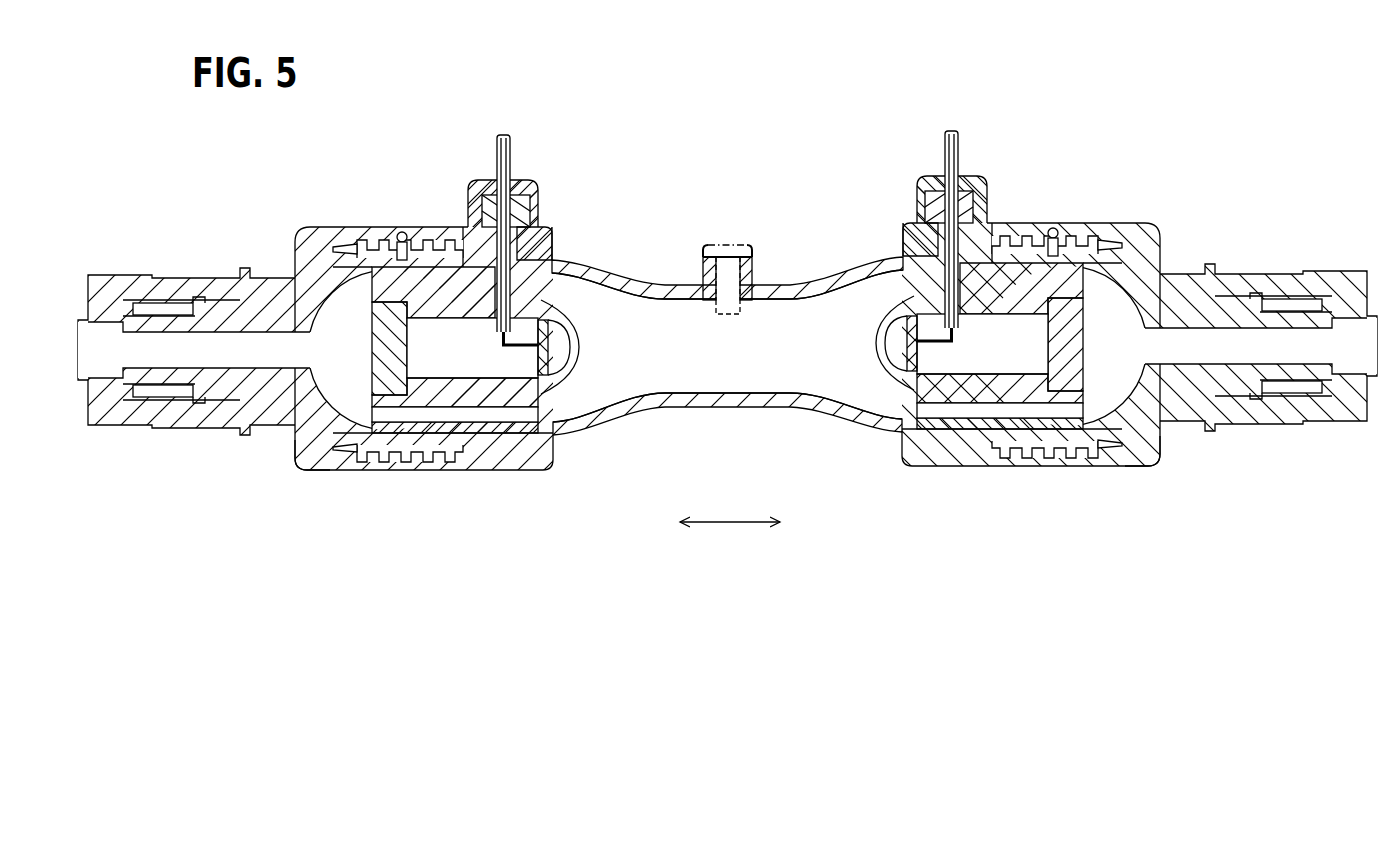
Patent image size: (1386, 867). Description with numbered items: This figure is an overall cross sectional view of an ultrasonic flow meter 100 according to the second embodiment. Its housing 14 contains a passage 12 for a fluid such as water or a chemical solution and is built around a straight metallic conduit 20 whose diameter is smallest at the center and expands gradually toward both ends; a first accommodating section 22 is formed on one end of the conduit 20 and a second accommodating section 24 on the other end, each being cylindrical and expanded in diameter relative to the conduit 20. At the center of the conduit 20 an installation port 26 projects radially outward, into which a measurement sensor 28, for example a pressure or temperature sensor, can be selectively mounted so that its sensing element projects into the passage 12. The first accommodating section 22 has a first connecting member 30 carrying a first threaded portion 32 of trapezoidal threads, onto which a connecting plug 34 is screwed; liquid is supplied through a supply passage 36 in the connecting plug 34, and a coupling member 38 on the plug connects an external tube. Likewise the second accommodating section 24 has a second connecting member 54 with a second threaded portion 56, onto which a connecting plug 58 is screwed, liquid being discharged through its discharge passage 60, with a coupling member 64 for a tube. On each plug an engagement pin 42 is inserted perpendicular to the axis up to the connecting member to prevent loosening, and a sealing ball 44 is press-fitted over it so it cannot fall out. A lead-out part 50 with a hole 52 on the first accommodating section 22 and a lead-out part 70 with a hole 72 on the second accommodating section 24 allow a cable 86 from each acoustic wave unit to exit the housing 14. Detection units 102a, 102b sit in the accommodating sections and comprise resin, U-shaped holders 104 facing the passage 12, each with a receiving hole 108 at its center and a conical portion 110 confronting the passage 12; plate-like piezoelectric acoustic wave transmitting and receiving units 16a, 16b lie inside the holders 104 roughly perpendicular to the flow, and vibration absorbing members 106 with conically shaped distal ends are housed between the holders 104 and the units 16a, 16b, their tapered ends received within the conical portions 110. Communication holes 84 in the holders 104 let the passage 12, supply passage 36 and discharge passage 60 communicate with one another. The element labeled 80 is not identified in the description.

The ultrasonic flow meter 100 is at (1162, 114).
The passage 12 is at (757, 387).
The housing 14 is at (612, 424).
The acoustic wave transmitting and receiving unit 16a is at (535, 360).
The acoustic wave transmitting and receiving unit 16b is at (920, 358).
The conduit 20 is at (796, 287).
The first accommodating section 22 is at (478, 472).
The second accommodating section 24 is at (983, 472).
The installation port 26 is at (727, 300).
The measurement sensor 28 is at (729, 240).
The first connecting member 30 is at (372, 442).
The first threaded portion 32 is at (420, 243).
The connecting plug 34 is at (297, 463).
The supply passage 36 is at (208, 360).
The coupling member 38 is at (125, 280).
The engagement pin 42 is at (392, 247).
The sealing ball 44 is at (402, 232).
The lead-out part 50 is at (540, 205).
The hole 52 is at (555, 242).
The second connecting member 54 is at (1083, 440).
The second threaded portion 56 is at (1017, 248).
The connecting plug 58 is at (1158, 460).
The discharge passage 60 is at (1247, 360).
The coupling member 64 is at (1330, 280).
The lead-out part 70 is at (913, 203).
The hole 72 is at (905, 238).
The end plate 80 is at (370, 330).
The communication holes 84 is at (433, 415).
The cable 86 is at (497, 150).
The detection unit 102a is at (580, 370).
The detection unit 102b is at (877, 368).
The holder 104 is at (517, 395).
The vibration absorbing member 106 is at (565, 338).
The receiving hole 108 is at (420, 355).
The conical portion 110 is at (572, 349).